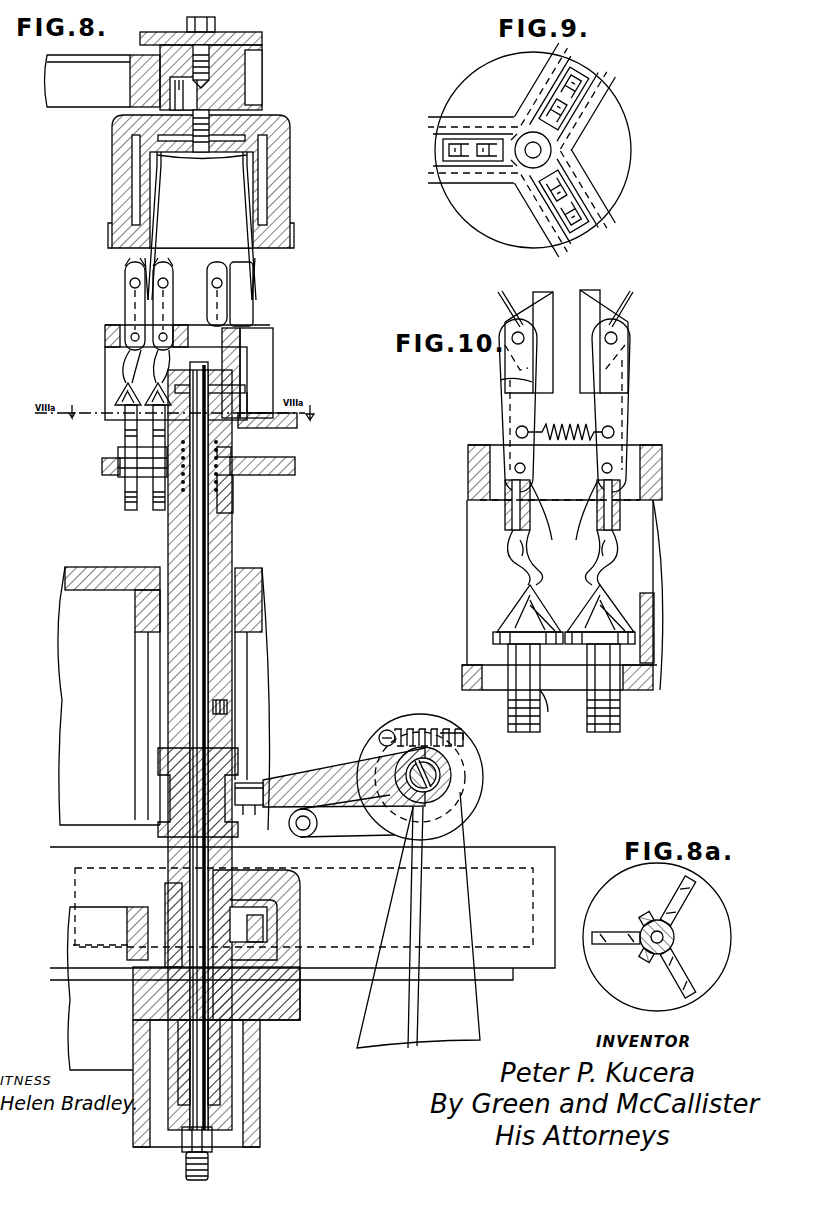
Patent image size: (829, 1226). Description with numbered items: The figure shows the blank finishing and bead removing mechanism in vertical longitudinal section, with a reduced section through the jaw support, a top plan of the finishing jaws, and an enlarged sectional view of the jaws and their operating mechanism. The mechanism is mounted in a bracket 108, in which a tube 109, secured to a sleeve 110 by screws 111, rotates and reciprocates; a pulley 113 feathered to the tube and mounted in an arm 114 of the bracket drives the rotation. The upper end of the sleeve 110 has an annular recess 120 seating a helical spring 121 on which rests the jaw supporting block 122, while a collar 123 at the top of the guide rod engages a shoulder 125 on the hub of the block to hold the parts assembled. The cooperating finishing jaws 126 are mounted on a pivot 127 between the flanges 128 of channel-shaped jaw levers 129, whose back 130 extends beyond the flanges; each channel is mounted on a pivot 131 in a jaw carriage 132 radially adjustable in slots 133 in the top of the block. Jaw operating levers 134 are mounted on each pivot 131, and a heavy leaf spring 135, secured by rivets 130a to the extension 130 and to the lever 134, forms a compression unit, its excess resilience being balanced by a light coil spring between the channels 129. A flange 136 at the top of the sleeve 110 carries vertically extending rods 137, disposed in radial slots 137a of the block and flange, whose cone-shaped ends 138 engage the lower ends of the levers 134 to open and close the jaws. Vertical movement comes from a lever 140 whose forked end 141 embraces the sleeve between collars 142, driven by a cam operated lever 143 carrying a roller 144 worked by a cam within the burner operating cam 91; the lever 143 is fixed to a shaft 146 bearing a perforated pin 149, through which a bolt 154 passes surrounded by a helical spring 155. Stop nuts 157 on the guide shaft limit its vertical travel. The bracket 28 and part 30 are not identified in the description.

In FIG. 8, the supporting arm 28 is at (70, 96).
In FIG. 8, the head block 30 is at (292, 186).
In FIG. 8, the burner operating cam 91 is at (553, 863).
In FIG. 8, the bracket 108 is at (73, 573).
In FIG. 8, the tube 109 is at (213, 541).
In FIG. 8, the sleeve 110 is at (232, 556).
In FIG. 8, the screws 111 is at (230, 708).
In FIG. 8, the pulley 113 is at (142, 952).
In FIG. 8, the arm 114 is at (300, 1000).
In FIG. 8, the annular recess 120 is at (233, 483).
In FIG. 8, the helical spring 121 is at (226, 448).
In FIG. 8, the jaw supporting block 122 is at (292, 430).
In FIG. 9, the jaw supporting block 122 is at (612, 125).
In FIG. 10, the jaw supporting block 122 is at (632, 667).
In FIG. 8A, the jaw supporting block 122 is at (707, 903).
In FIG. 8, the collar 123 is at (225, 386).
In FIG. 8A, the collar 123 is at (677, 938).
In FIG. 8, the shoulder 125 is at (236, 400).
In FIG. 8, the finishing jaws 126 is at (232, 272).
In FIG. 10, the finishing jaws 126 is at (590, 296).
In FIG. 10, the pivot 127 is at (618, 338).
In FIG. 8, the flanges 128 is at (128, 310).
In FIG. 10, the flanges 128 is at (612, 378).
In FIG. 10, the jaw levers 129 is at (630, 405).
In FIG. 10, the back of channel 130 is at (508, 512).
In FIG. 10, the rivets 130a is at (563, 528).
In FIG. 10, the pivot 131 is at (612, 468).
In FIG. 9, the jaw carriage 132 is at (568, 190).
In FIG. 10, the jaw carriage 132 is at (656, 480).
In FIG. 9, the slots 133 is at (592, 205).
In FIG. 10, the jaw operating levers 134 is at (512, 568).
In FIG. 10, the leaf spring 135 is at (515, 560).
In FIG. 8, the flange 136 is at (282, 455).
In FIG. 8, the rods 137 is at (135, 447).
In FIG. 10, the rods 137 is at (622, 712).
In FIG. 8A, the rods 137 is at (628, 928).
In FIG. 8, the radial slots 137a is at (118, 452).
In FIG. 10, the radial slots 137a is at (567, 703).
In FIG. 8A, the radial slots 137a is at (672, 905).
In FIG. 8, the cone-shaped ends 138 is at (120, 396).
In FIG. 10, the cone-shaped ends 138 is at (503, 617).
In FIG. 8, the lever 140 is at (258, 795).
In FIG. 8, the forked end 141 is at (236, 790).
In FIG. 8, the collars 142 is at (166, 760).
In FIG. 8, the cam operated lever 143 is at (380, 830).
In FIG. 8, the roller 144 is at (315, 832).
In FIG. 8, the shaft 146 is at (442, 775).
In FIG. 8, the perforated pin 149 is at (390, 730).
In FIG. 8, the bolt 154 is at (420, 727).
In FIG. 8, the helical spring 155 is at (452, 728).
In FIG. 8, the stop nuts 157 is at (214, 1136).